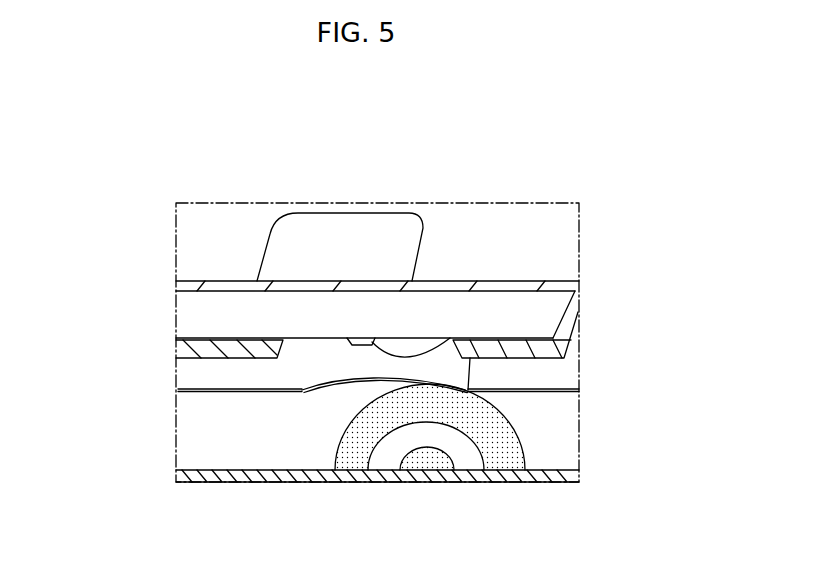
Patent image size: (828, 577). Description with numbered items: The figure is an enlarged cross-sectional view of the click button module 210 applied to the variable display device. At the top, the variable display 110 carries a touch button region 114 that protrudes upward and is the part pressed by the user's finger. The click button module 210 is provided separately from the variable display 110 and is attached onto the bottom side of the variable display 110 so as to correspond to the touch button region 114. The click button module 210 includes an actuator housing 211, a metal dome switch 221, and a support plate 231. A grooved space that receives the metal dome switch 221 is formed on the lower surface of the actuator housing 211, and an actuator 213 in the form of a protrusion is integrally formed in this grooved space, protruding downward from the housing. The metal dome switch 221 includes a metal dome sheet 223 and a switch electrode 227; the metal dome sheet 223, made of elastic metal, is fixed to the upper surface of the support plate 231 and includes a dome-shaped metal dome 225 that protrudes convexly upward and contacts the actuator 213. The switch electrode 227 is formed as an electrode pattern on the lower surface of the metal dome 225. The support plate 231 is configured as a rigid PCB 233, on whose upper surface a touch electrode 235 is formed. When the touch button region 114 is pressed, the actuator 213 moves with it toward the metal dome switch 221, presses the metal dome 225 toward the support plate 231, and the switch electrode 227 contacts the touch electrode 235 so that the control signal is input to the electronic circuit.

The variable display 110 is at (162, 237).
The touch button region 114 is at (347, 213).
The click button module 210 is at (597, 368).
The actuator housing 211 is at (178, 346).
The actuator 213 is at (450, 338).
The metal dome switch 221 is at (99, 470).
The metal dome sheet 223 is at (187, 377).
The metal dome 225 is at (330, 373).
The switch electrode 227 is at (338, 386).
The support plate 231 is at (492, 519).
The PCB 233 is at (548, 455).
The touch electrode 235 is at (505, 455).